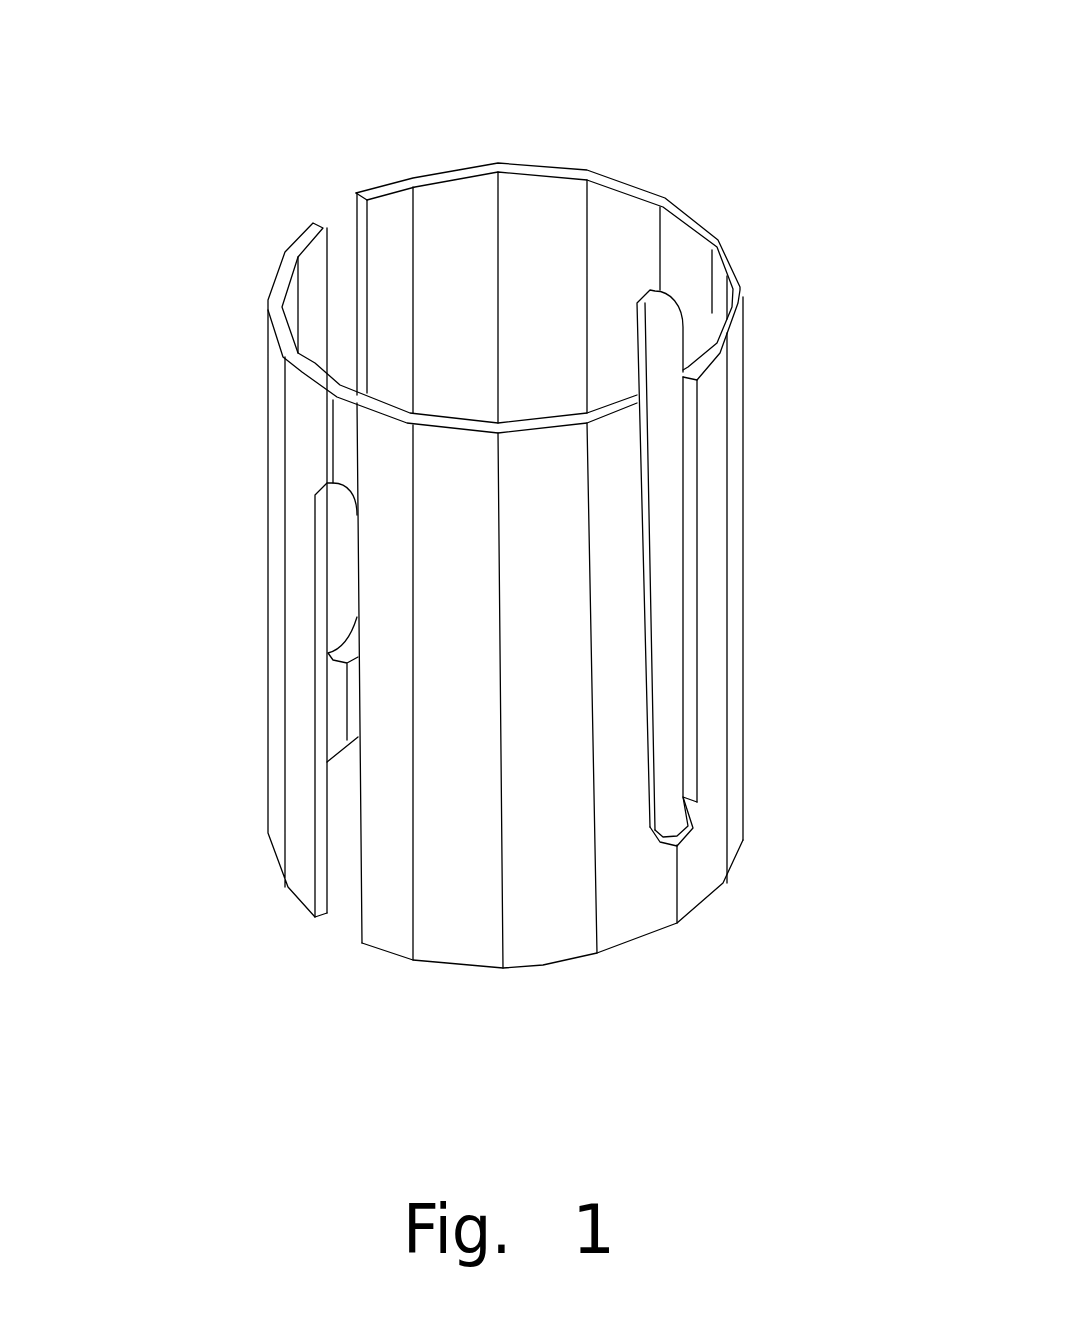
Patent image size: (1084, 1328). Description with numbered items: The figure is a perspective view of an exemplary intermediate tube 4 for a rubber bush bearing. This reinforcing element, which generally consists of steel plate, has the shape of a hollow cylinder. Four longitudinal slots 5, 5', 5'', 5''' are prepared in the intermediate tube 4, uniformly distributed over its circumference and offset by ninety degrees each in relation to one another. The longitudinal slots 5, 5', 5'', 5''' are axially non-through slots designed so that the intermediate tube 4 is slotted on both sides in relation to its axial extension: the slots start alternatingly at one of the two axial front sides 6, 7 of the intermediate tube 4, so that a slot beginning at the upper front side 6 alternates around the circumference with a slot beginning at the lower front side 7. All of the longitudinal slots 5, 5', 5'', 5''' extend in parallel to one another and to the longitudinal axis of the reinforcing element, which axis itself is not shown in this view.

The intermediate tube 4 is at (549, 862).
The longitudinal slot 5 is at (254, 700).
The longitudinal slot 5' is at (778, 611).
The longitudinal slot 5'' is at (787, 546).
The longitudinal slot 5''' is at (209, 568).
The axial front side 6 is at (437, 173).
The axial front side 7 is at (447, 958).